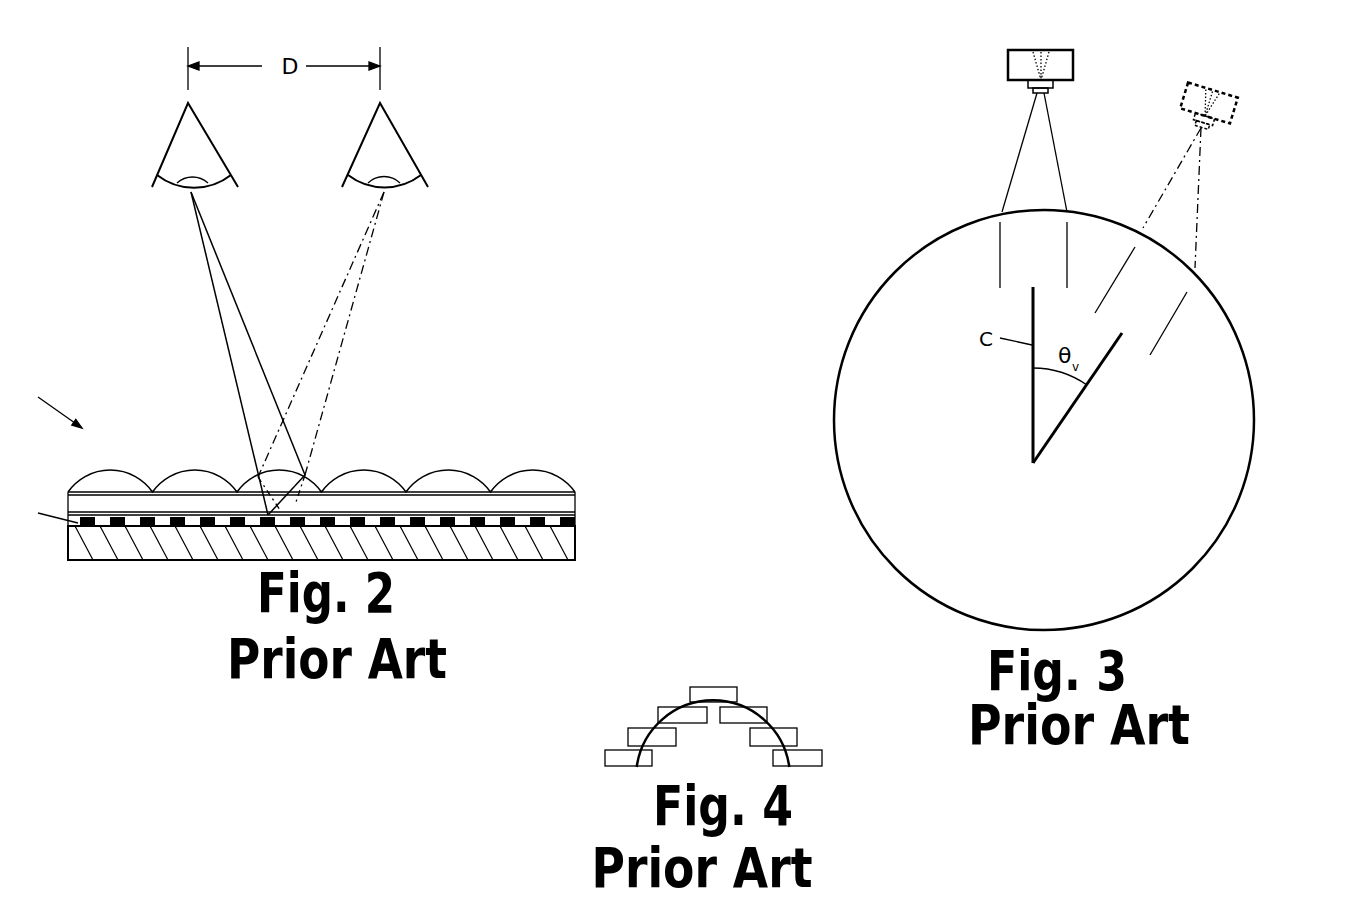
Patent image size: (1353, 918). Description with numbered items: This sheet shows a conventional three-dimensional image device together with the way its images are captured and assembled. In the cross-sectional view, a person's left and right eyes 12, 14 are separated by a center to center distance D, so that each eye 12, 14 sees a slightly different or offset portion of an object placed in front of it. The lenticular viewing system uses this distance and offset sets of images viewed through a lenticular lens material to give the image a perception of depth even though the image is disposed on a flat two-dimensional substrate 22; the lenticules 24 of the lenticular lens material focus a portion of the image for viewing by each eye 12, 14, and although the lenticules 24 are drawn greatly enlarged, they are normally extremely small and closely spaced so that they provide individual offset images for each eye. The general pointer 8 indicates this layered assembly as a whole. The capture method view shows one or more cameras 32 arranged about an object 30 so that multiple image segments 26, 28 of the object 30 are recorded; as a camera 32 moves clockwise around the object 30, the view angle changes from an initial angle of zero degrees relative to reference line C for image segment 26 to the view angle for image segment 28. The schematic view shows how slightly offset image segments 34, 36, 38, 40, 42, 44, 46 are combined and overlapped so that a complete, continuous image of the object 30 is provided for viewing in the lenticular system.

In FIG. 2, the lenticular display assembly 8 is at (305, 514).
In FIG. 2, the left eye 12 is at (182, 137).
In FIG. 2, the right eye 14 is at (383, 142).
In FIG. 2, the two-dimensional substrate 22 is at (132, 543).
In FIG. 2, the lenticules 24 is at (202, 482).
In FIG. 3, the image segment 26 is at (1035, 214).
In FIG. 3, the image segment 28 is at (1162, 253).
In FIG. 3, the object 30 is at (1236, 330).
In FIG. 3, the camera 32 is at (1192, 97).
In FIG. 4, the image segment 34 is at (622, 758).
In FIG. 4, the image segment 36 is at (638, 732).
In FIG. 4, the image segment 38 is at (678, 715).
In FIG. 4, the image segment 40 is at (707, 693).
In FIG. 4, the image segment 42 is at (758, 708).
In FIG. 4, the image segment 44 is at (782, 732).
In FIG. 4, the image segment 46 is at (808, 758).